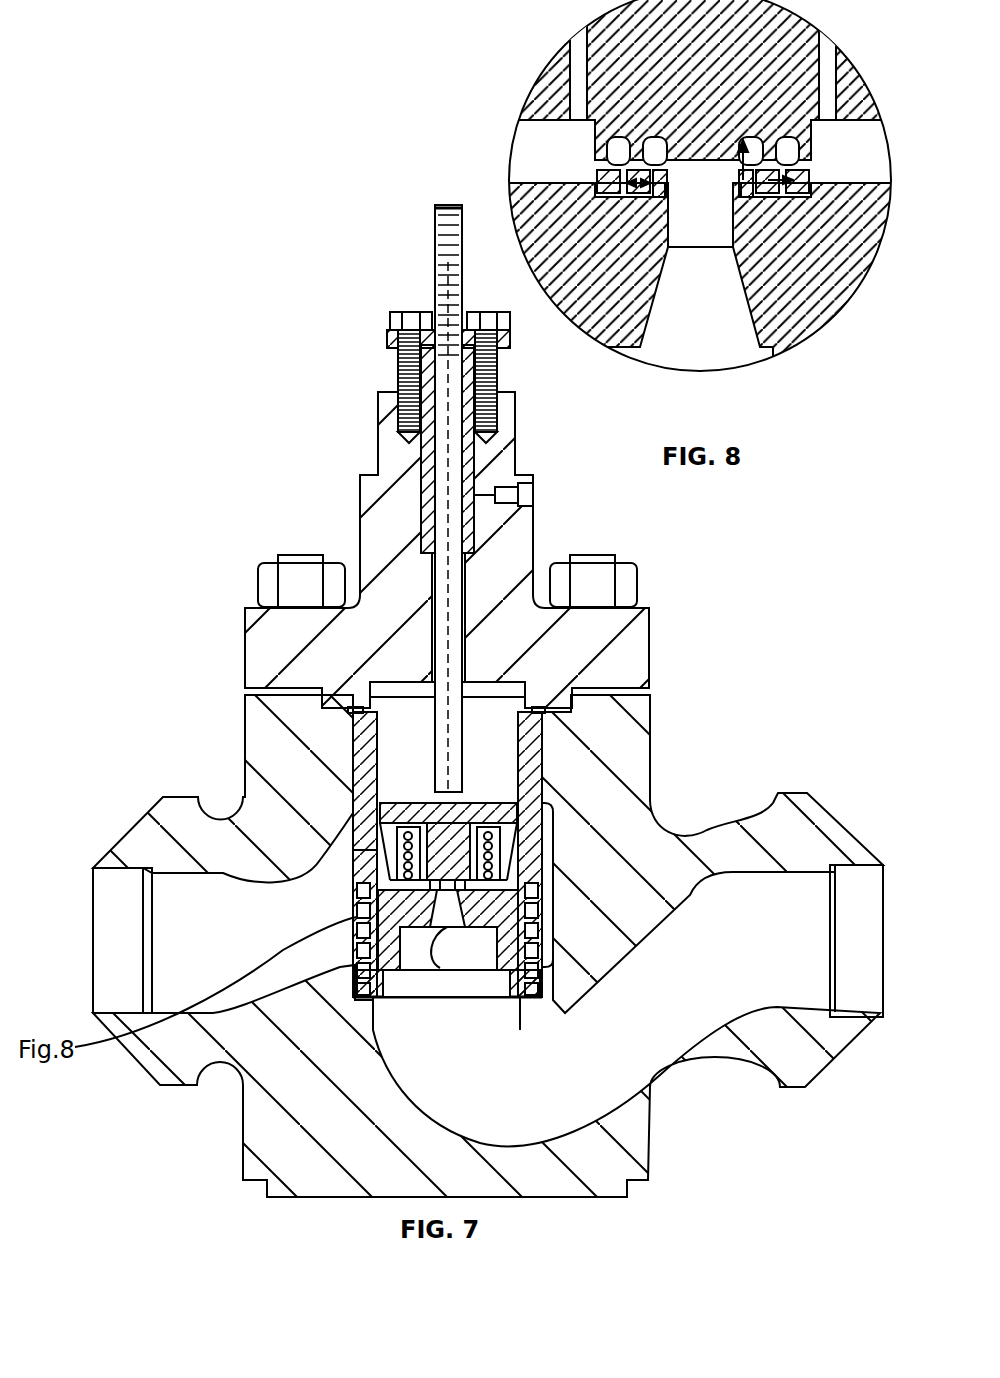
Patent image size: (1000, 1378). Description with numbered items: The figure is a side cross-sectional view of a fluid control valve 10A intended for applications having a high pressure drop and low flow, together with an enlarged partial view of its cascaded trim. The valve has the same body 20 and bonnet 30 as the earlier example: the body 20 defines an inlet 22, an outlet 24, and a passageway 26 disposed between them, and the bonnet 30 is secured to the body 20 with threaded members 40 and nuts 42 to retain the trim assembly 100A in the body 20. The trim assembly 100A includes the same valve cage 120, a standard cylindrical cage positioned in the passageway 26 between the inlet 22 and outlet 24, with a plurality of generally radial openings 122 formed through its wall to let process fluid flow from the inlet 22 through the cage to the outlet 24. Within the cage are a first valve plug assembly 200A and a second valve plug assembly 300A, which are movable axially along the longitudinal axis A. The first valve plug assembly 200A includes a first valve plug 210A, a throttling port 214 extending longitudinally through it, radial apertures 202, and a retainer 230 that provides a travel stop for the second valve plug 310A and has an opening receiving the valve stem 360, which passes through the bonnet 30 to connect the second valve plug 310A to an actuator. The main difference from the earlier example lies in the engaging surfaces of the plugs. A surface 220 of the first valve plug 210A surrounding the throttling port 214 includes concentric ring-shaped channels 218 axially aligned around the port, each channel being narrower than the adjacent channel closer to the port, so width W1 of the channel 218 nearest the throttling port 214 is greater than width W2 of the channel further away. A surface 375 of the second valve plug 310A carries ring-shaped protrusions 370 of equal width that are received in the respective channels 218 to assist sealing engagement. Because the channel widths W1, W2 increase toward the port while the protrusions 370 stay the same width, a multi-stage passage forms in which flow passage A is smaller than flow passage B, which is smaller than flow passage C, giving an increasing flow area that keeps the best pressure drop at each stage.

In FIG. 7, the fluid control valve 10A is at (183, 273).
In FIG. 7, the body 20 is at (263, 717).
In FIG. 7, the inlet 22 is at (107, 905).
In FIG. 7, the outlet 24 is at (860, 888).
In FIG. 7, the passageway 26 is at (458, 1031).
In FIG. 7, the bonnet 30 is at (640, 622).
In FIG. 7, the threaded members 40 is at (300, 556).
In FIG. 7, the nuts 42 is at (268, 585).
In FIG. 7, the trim assembly 100A is at (559, 833).
In FIG. 7, the valve cage 120 is at (520, 798).
In FIG. 7, the radial openings 122 is at (530, 922).
In FIG. 7, the first valve plug assembly 200A is at (500, 1030).
In FIG. 7, the radial apertures 202 is at (375, 887).
In FIG. 7, the first valve plug 210A is at (448, 988).
In FIG. 7, the throttling port 214 is at (472, 952).
In FIG. 8, the channels 218 is at (605, 200).
In FIG. 8, the surface 220 is at (562, 172).
In FIG. 7, the retainer 230 is at (398, 830).
In FIG. 7, the second valve plug assembly 300A is at (557, 768).
In FIG. 7, the second valve plug 310A is at (375, 845).
In FIG. 7, the valve stem 360 is at (447, 623).
In FIG. 8, the protrusions 370 is at (614, 154).
In FIG. 8, the surface 375 is at (745, 207).
In FIG. 7, the flow passage A is at (445, 478).
In FIG. 8, the flow passage A is at (600, 172).
In FIG. 8, the flow passage B is at (672, 149).
In FIG. 8, the flow passage C is at (647, 160).
In FIG. 8, the width W1 is at (637, 195).
In FIG. 8, the width W2 is at (800, 190).